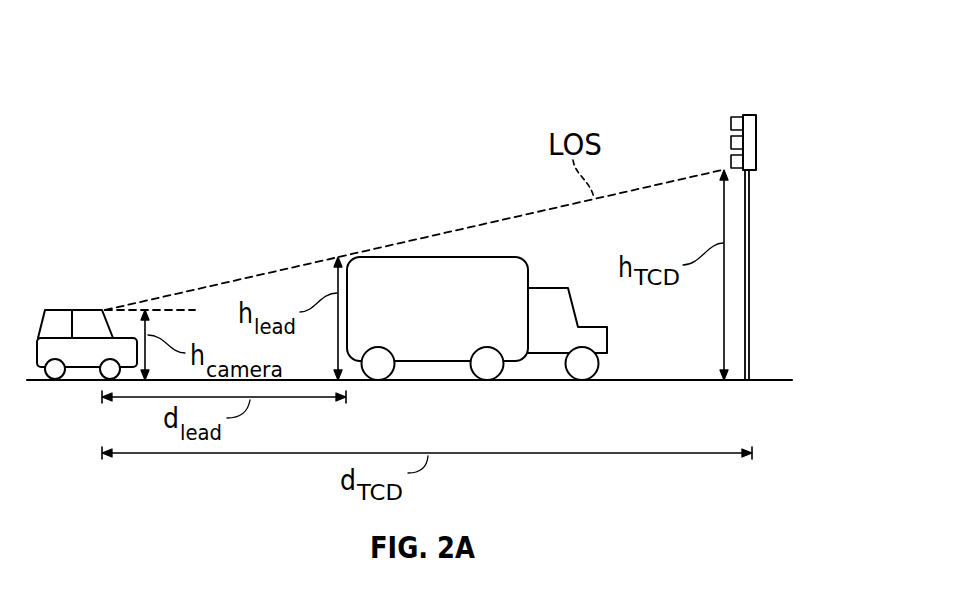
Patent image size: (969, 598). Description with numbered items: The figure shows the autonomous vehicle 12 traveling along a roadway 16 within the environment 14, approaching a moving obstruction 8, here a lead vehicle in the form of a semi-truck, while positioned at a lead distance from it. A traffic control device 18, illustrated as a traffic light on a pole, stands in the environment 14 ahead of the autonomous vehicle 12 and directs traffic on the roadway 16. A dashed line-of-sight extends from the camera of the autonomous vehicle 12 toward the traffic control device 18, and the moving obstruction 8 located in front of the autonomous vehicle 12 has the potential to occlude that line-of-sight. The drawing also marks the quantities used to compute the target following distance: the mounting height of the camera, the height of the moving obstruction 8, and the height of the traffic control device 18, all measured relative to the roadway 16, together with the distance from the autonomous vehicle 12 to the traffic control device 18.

The moving obstruction 8 is at (558, 288).
The autonomous vehicle 12 is at (57, 310).
The environment 14 is at (593, 36).
The roadway 16 is at (632, 380).
The traffic control device 18 is at (747, 115).